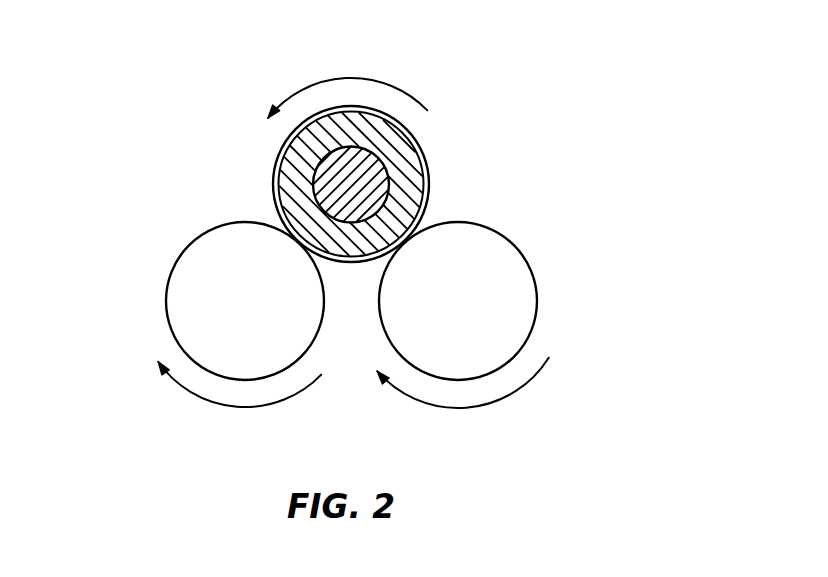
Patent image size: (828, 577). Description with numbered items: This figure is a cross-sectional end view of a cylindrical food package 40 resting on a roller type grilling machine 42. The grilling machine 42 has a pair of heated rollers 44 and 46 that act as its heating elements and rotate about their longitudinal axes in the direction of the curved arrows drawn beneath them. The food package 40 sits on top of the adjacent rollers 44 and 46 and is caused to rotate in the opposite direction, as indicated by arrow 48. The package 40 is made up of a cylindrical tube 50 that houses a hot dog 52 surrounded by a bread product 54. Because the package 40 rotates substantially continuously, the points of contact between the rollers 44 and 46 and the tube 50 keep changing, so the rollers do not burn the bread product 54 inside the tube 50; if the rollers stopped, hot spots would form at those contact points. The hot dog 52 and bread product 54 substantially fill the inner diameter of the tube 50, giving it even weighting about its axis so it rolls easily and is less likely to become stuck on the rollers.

The cylindrical food package 40 is at (392, 165).
The roller type grilling machine 42 is at (531, 313).
The heated roller 44 is at (167, 313).
The heated roller 46 is at (555, 300).
The arrow 48 is at (350, 78).
The cylindrical tube 50 is at (432, 187).
The hot dog 52 is at (338, 175).
The bread product 54 is at (398, 155).